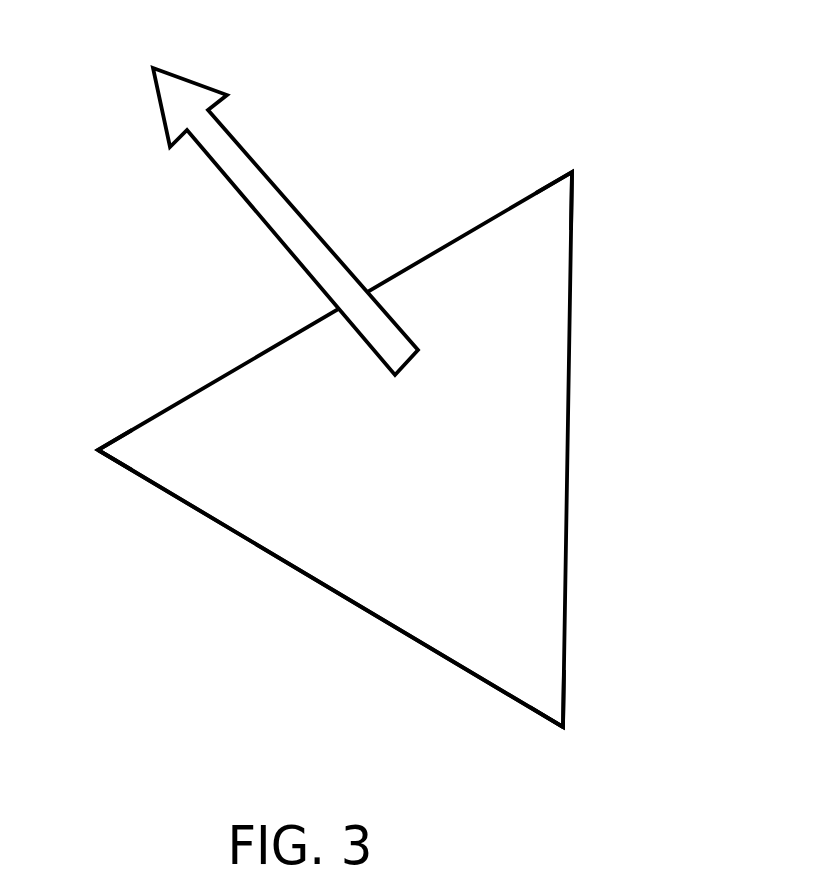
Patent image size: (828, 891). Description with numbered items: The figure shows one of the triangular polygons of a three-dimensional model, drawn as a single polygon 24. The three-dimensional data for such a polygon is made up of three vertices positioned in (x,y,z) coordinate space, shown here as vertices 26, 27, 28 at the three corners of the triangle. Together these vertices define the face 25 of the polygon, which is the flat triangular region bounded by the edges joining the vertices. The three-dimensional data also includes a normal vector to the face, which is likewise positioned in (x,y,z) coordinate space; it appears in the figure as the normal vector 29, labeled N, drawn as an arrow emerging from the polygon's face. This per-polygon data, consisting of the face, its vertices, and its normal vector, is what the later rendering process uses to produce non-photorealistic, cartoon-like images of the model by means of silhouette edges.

The polygon 24 is at (622, 311).
The face 25 is at (302, 537).
The vertex 26 is at (572, 172).
The vertex 27 is at (98, 450).
The vertex 28 is at (563, 727).
The normal vector 29 is at (268, 182).